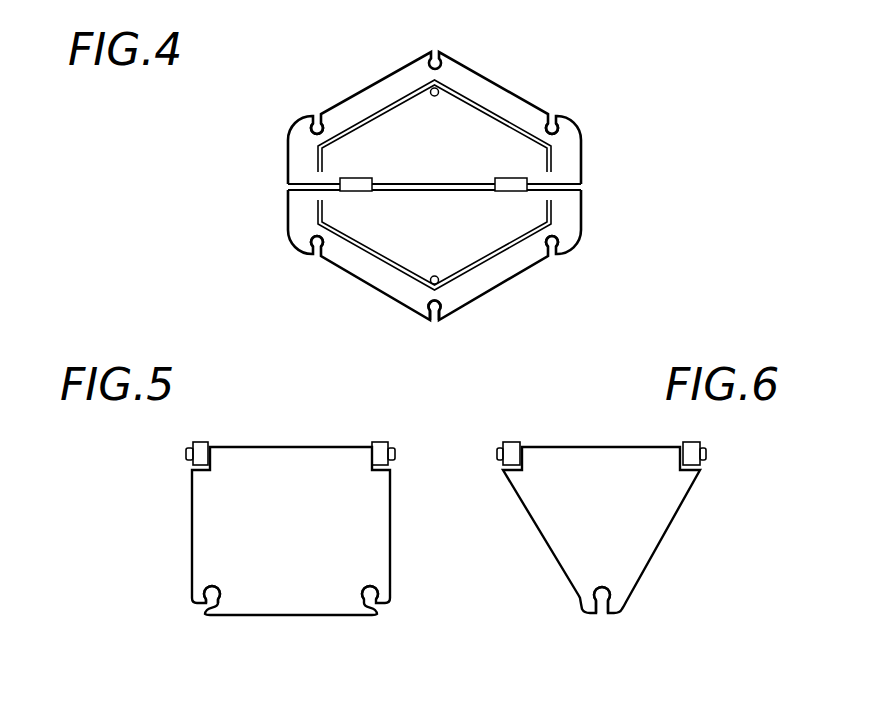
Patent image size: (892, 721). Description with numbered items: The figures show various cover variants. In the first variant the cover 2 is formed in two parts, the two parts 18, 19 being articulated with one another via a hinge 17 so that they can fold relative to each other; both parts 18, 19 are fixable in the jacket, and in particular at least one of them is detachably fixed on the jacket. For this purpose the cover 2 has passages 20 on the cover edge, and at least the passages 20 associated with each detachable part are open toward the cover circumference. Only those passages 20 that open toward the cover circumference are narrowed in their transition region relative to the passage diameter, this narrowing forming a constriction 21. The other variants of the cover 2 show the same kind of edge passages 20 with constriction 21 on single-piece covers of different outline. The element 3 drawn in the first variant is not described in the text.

In FIG. 4, the cover 2 is at (489, 160).
In FIG. 5, the cover 2 is at (165, 523).
In FIG. 6, the cover 2 is at (694, 546).
In FIG. 4, the clamping insert 3 is at (449, 117).
In FIG. 4, the hinge 17 is at (508, 185).
In FIG. 4, the part 18 is at (567, 168).
In FIG. 4, the part 19 is at (563, 205).
In FIG. 4, the passage 20 is at (311, 128).
In FIG. 5, the passage 20 is at (375, 593).
In FIG. 6, the passage 20 is at (604, 599).
In FIG. 4, the constriction 21 is at (434, 318).
In FIG. 5, the constriction 21 is at (199, 604).
In FIG. 6, the constriction 21 is at (603, 604).